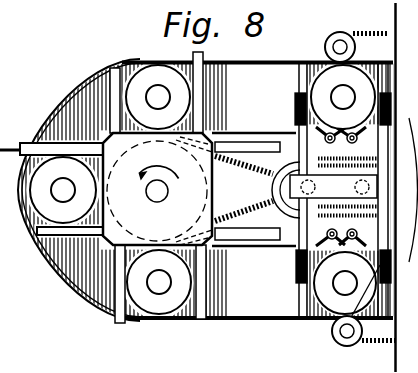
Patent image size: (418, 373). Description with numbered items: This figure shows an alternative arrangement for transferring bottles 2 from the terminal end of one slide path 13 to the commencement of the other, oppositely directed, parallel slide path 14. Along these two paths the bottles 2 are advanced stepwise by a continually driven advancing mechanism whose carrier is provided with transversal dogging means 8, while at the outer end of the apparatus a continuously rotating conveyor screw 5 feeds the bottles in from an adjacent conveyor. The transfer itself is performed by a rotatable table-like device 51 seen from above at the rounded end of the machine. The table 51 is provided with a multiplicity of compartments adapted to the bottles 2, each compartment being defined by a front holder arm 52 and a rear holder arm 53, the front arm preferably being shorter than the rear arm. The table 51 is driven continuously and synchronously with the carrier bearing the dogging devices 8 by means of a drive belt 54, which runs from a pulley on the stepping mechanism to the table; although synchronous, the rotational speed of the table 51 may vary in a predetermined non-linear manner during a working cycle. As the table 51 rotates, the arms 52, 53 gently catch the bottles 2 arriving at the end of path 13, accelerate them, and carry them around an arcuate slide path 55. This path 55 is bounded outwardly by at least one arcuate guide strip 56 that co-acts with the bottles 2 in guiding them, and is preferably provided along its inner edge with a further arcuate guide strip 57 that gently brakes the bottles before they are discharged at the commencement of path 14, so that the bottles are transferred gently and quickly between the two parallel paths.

The bottles 2 is at (155, 70).
The conveyor screw 5 is at (401, 126).
The transversal dogging means 8 is at (393, 60).
The slide path 13 is at (292, 76).
The slide path 14 is at (280, 300).
The rotatable table-like device 51 is at (63, 275).
The front holder arm 52 is at (108, 64).
The rear holder arm 53 is at (207, 80).
The drive belt 54 is at (262, 248).
The arcuate slide path 55 is at (103, 294).
The arcuate guide strip 56 is at (78, 84).
The arcuate guide strip 57 is at (250, 220).